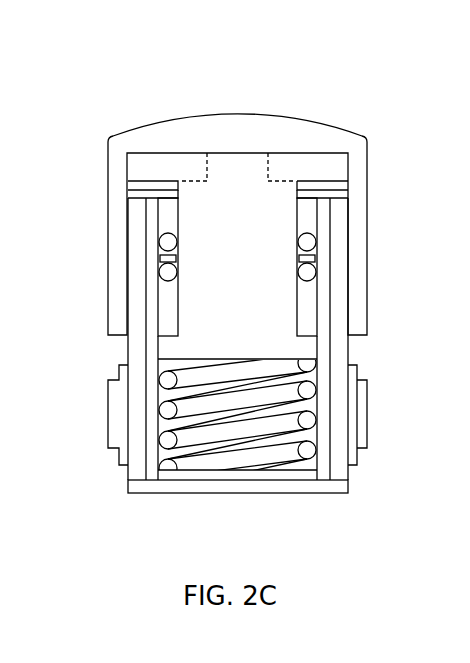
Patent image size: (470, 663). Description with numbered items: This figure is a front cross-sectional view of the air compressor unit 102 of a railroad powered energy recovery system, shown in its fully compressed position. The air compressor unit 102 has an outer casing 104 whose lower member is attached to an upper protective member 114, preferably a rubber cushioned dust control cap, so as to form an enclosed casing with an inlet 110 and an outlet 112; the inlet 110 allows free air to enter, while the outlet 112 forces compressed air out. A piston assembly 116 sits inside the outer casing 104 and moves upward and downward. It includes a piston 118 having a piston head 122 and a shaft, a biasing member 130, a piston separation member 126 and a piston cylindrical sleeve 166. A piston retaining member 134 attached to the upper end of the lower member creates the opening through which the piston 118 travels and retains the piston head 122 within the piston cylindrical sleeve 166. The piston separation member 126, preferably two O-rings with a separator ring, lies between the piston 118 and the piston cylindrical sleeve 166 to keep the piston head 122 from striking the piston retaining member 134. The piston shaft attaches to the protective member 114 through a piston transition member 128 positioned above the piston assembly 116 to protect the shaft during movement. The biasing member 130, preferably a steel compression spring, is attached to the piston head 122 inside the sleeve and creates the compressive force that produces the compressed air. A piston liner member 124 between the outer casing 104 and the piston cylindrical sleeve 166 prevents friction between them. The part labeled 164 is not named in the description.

The air compressor unit 102 is at (239, 63).
The outer casing 104 is at (376, 281).
The inlet 110 is at (108, 418).
The outlet 112 is at (366, 418).
The upper protective member 114 is at (340, 122).
The piston assembly 116 is at (206, 193).
The piston 118 is at (198, 244).
The piston head 122 is at (272, 346).
The piston liner member 124 is at (145, 289).
The piston separation member 126 is at (308, 245).
The piston transition member 128 is at (335, 168).
The biasing member 130 is at (172, 383).
The piston retaining member 134 is at (336, 194).
The step flange 164 is at (358, 373).
The piston cylindrical sleeve 166 is at (157, 332).